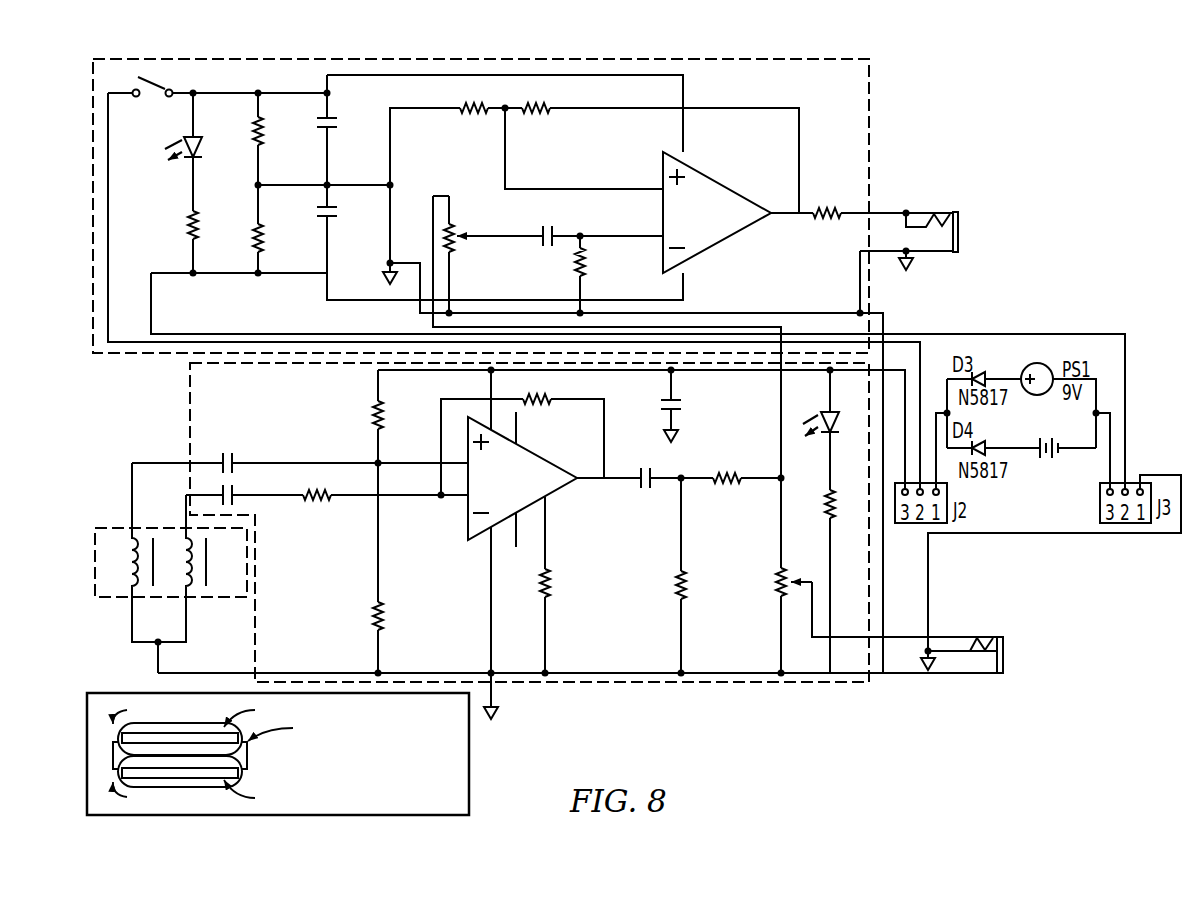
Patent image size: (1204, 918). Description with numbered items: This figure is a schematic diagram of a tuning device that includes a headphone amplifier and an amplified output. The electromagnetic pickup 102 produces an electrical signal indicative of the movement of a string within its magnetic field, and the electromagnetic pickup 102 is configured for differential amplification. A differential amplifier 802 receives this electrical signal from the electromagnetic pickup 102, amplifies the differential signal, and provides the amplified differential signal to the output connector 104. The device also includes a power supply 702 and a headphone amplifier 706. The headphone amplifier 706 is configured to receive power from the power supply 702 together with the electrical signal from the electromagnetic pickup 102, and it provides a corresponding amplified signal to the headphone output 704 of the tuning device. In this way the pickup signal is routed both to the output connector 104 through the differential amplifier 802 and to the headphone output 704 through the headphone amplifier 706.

The electromagnetic pickup 102 is at (113, 598).
The output connector 104 is at (1005, 675).
The power supply 702 is at (1048, 463).
The headphone output 704 is at (962, 211).
The headphone amplifier 706 is at (367, 58).
The differential amplifier 802 is at (538, 683).